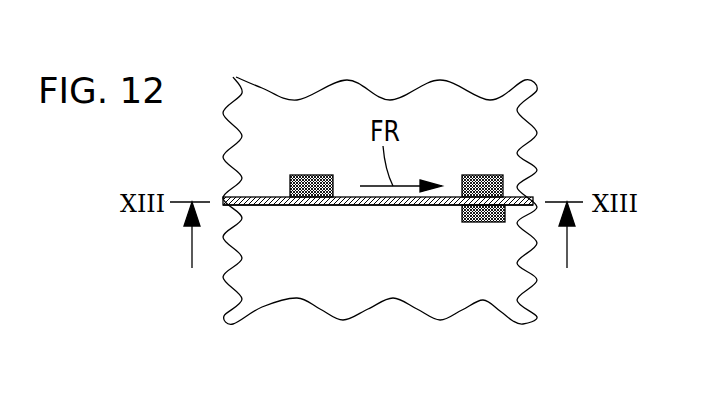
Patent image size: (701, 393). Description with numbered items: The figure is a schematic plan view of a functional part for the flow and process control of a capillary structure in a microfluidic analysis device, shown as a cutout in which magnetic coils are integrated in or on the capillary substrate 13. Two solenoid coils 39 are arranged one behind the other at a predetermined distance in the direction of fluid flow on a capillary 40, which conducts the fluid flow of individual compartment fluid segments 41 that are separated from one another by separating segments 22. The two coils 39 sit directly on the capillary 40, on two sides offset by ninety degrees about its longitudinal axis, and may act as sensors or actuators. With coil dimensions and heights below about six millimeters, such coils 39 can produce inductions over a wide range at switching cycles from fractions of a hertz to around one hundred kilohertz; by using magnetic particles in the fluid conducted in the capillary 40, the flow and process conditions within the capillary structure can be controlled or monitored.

The capillary substrate 13 is at (477, 268).
The separating segments 22 is at (282, 197).
The solenoid coils 39 is at (475, 177).
The capillary 40 is at (520, 197).
The compartment fluid segments 41 is at (262, 205).